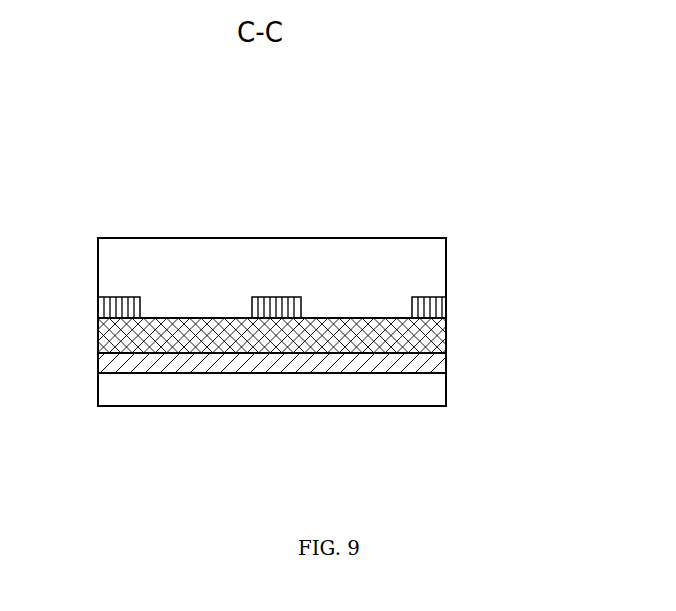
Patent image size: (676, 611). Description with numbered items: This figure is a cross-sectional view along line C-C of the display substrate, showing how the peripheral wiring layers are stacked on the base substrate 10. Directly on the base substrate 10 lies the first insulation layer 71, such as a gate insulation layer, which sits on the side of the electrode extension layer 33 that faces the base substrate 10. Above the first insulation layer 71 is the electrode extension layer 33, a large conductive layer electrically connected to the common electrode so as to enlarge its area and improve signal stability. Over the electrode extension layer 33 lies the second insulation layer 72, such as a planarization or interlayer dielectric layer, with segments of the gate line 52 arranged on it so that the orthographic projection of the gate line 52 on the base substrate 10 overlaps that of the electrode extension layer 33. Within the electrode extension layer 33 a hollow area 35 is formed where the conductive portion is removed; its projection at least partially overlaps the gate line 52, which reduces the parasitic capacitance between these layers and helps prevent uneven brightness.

The base substrate 10 is at (122, 383).
The electrode extension layer 33 is at (248, 363).
The hollow area 35 is at (343, 310).
The gate line 52 is at (440, 308).
The first insulation layer 71 is at (353, 343).
The second insulation layer 72 is at (140, 278).